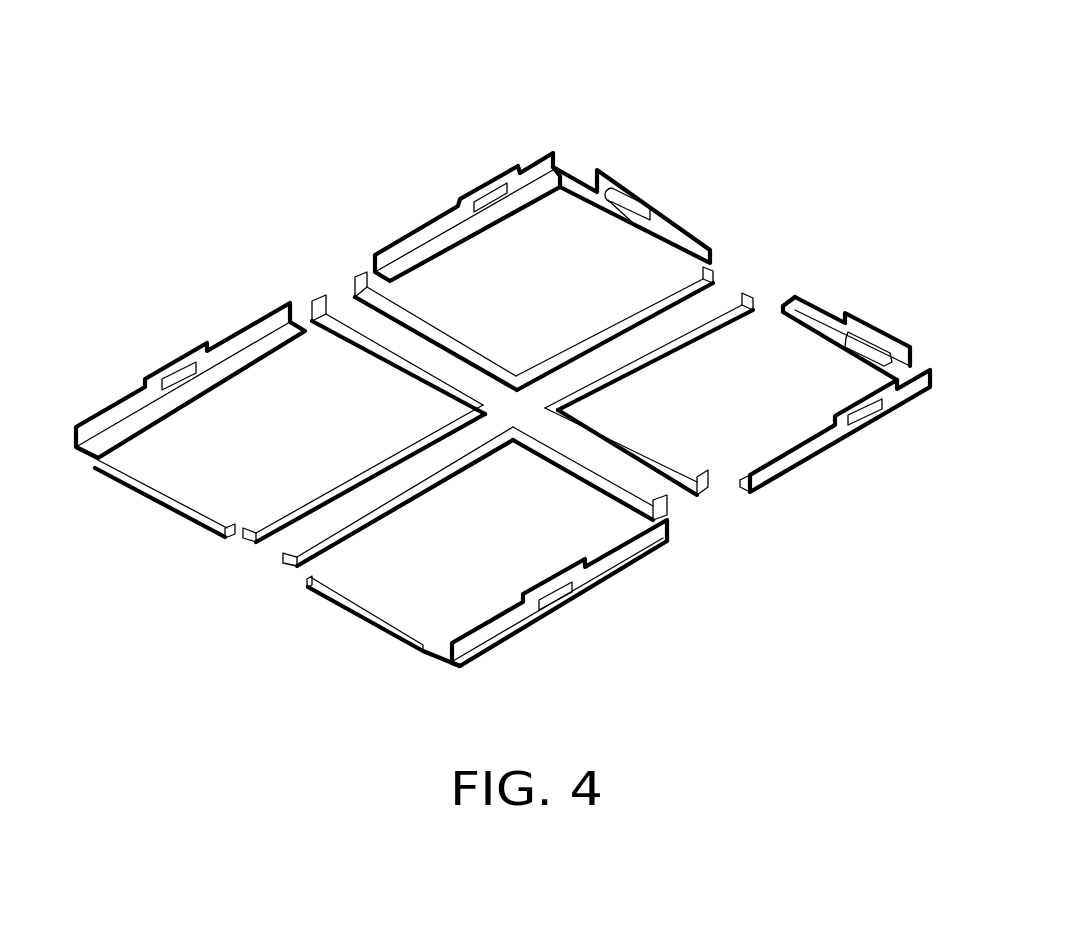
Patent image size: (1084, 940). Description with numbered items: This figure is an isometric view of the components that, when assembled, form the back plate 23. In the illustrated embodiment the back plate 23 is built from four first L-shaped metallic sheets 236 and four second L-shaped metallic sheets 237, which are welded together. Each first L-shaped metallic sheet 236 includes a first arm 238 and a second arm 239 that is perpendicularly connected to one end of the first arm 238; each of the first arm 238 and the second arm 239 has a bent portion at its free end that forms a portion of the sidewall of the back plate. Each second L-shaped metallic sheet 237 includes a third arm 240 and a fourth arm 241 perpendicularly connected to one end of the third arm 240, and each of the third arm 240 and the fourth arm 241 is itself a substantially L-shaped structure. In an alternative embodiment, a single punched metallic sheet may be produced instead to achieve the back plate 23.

The back plate 23 is at (506, 26).
The first L-shaped metallic sheet 236 is at (608, 280).
The second L-shaped metallic sheet 237 is at (677, 92).
The first arm 238 is at (592, 343).
The second arm 239 is at (477, 360).
The third arm 240 is at (563, 185).
The fourth arm 241 is at (528, 195).